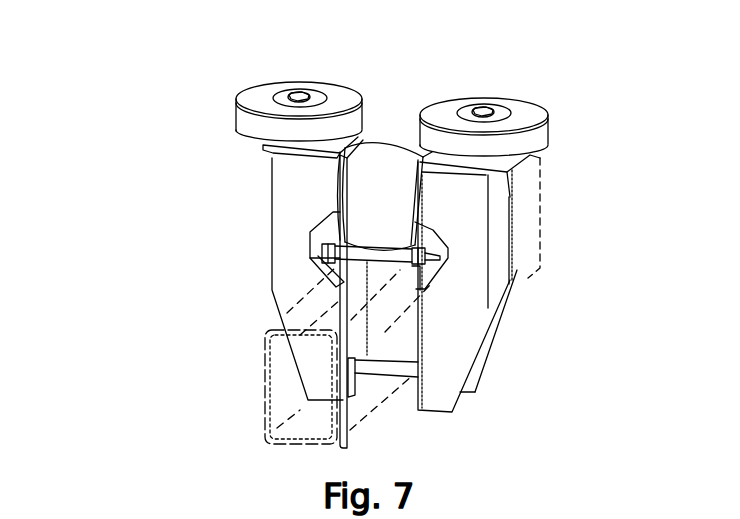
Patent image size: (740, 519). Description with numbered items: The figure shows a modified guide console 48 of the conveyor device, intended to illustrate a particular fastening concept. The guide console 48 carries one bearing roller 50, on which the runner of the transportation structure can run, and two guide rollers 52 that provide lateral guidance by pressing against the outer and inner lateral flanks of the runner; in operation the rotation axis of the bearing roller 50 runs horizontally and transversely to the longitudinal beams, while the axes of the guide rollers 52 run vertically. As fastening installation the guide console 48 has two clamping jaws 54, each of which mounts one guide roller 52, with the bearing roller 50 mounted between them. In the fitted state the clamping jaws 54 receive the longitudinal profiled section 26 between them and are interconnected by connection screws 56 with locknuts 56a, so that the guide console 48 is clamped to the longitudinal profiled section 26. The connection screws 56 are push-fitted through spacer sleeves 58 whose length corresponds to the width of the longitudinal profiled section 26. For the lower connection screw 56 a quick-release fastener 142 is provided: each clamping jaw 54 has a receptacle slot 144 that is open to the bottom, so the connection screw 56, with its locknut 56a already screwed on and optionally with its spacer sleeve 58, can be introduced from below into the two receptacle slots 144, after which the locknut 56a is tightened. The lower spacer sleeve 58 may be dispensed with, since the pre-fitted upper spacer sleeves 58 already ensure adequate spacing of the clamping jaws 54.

The guide console 48 is at (152, 254).
The guide roller 52 is at (254, 94).
The bearing roller 50 is at (380, 165).
The clamping jaw 54 is at (283, 200).
The connection screw 56 is at (442, 257).
The locknut 56a is at (312, 264).
The spacer sleeve 58 is at (385, 258).
The longitudinal profiled section 26 is at (540, 215).
The receptacle slot 144 is at (348, 402).
The quick-release fastener 142 is at (337, 428).